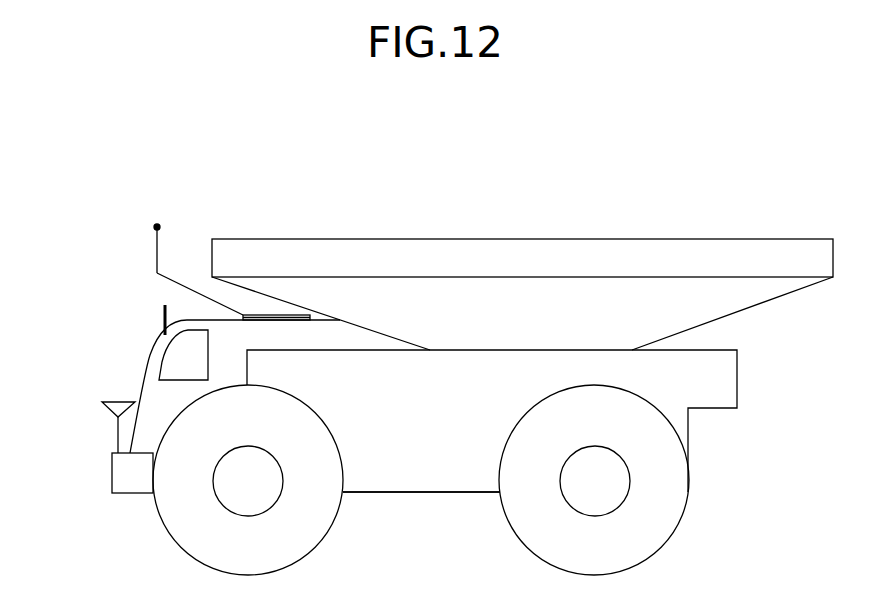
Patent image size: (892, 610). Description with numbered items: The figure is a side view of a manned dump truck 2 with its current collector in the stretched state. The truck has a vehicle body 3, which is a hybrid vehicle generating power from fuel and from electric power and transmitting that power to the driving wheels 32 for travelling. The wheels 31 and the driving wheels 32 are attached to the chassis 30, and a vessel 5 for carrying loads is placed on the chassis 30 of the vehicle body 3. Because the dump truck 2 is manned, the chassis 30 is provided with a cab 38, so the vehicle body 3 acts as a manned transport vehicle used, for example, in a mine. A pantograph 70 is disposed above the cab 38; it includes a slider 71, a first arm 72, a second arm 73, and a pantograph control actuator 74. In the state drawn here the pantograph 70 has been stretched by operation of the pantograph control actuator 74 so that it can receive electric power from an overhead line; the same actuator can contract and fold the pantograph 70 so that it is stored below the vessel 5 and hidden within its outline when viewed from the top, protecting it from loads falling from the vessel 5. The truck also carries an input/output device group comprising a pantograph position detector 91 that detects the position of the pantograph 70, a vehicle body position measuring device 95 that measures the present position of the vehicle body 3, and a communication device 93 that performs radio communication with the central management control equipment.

The dump truck 2 is at (682, 177).
The vehicle body 3 is at (777, 363).
The vessel 5 is at (775, 250).
The chassis 30 is at (422, 480).
The wheels 31 is at (190, 537).
The driving wheels 32 is at (532, 537).
The cab 38 is at (165, 362).
The pantograph 70 is at (135, 240).
The slider 71 is at (154, 224).
The first arm 72 is at (158, 253).
The second arm 73 is at (197, 287).
The pantograph control actuator 74 is at (279, 298).
The pantograph position detector 91 is at (175, 316).
The communication device 93 is at (97, 415).
The vehicle body position measuring device 95 is at (163, 323).